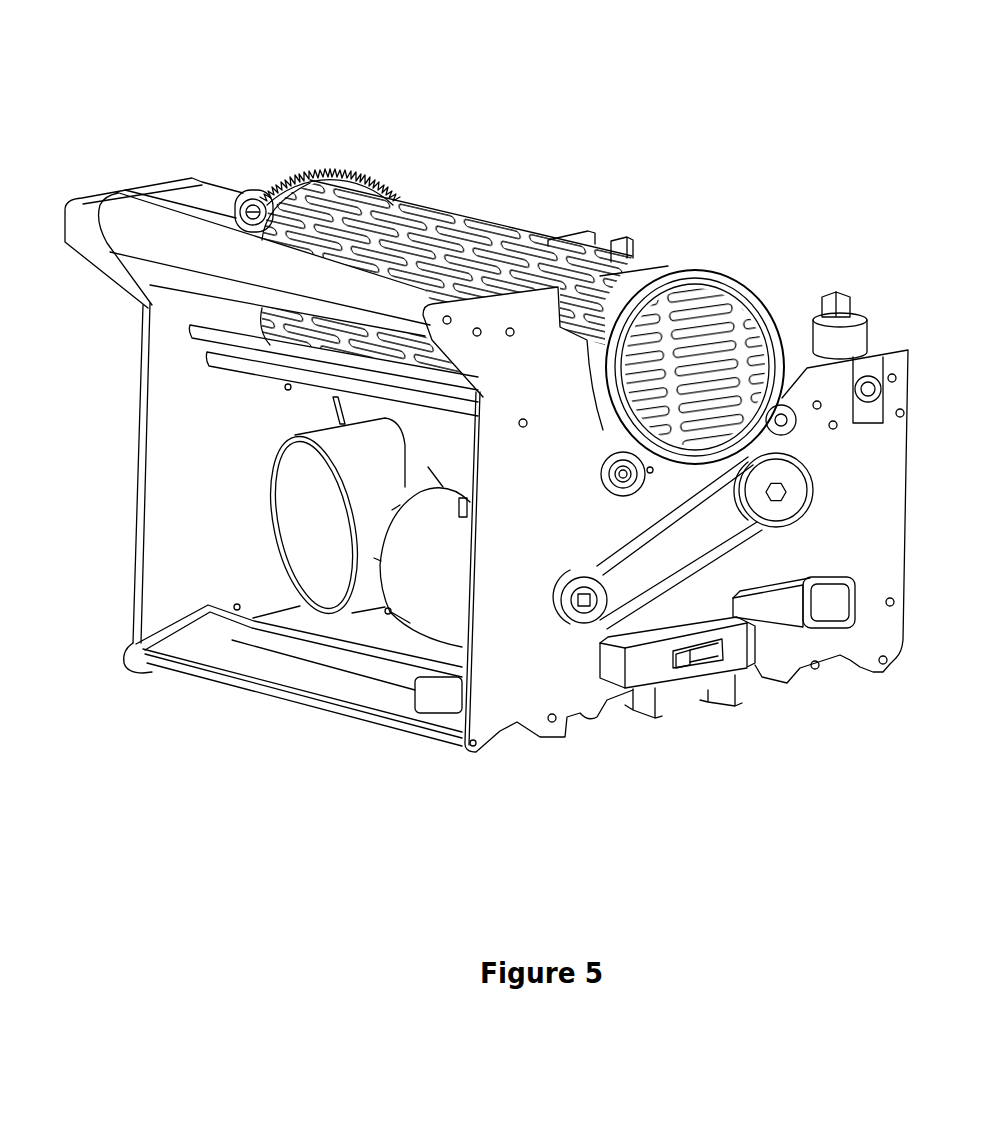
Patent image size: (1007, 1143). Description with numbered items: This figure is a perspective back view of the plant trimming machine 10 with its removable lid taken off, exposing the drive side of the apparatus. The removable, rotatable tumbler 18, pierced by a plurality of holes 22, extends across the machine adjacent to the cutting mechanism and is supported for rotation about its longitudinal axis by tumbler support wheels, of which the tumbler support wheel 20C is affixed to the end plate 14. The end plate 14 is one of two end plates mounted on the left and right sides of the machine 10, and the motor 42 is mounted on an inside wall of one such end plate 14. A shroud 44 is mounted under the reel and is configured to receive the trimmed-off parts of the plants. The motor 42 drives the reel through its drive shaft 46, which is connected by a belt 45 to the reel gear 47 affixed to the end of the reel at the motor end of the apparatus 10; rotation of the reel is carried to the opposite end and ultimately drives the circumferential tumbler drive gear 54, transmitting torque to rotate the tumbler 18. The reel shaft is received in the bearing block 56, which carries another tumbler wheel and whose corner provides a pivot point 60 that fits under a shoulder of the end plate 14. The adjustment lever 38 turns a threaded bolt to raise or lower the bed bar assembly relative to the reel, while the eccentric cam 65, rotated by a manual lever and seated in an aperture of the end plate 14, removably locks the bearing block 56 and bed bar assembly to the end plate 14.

The plant trimming machine 10 is at (398, 96).
The end plate 14 is at (586, 716).
The tumbler 18 is at (688, 272).
The tumbler support wheel 20C is at (622, 478).
The holes 22 is at (612, 258).
The adjustment lever 38 is at (834, 300).
The motor 42 is at (386, 610).
The shroud 44 is at (288, 511).
The belt 45 is at (651, 589).
The drive shaft 46 is at (580, 598).
The reel gear 47 is at (793, 485).
The tumbler drive gear 54 is at (303, 175).
The bearing block 56 is at (812, 521).
The pivot point 60 is at (692, 488).
The eccentric cam 65 is at (857, 397).